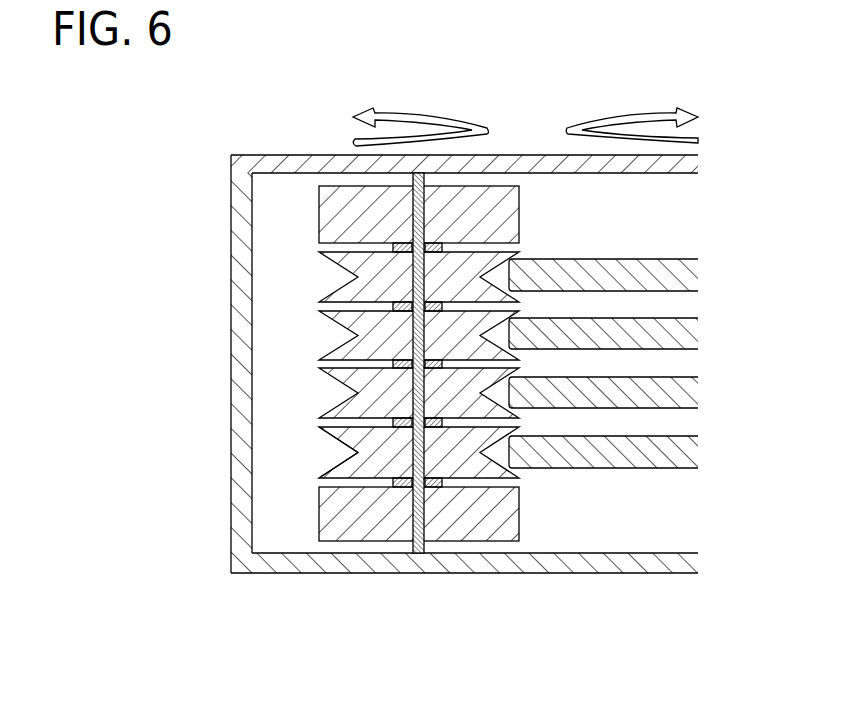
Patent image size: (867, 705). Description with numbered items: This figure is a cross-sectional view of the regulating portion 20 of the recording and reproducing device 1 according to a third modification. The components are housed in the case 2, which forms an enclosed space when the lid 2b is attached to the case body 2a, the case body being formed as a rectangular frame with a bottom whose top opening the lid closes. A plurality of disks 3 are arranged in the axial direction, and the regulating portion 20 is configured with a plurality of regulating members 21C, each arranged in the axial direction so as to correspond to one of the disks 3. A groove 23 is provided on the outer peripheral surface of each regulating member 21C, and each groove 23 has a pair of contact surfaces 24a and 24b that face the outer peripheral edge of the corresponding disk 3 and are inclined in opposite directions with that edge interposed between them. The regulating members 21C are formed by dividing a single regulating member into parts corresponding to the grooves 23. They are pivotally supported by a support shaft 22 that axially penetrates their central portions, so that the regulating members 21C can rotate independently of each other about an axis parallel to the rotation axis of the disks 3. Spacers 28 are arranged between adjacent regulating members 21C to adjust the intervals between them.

The recording and reproducing device 1 is at (120, 132).
The case 2 is at (402, 367).
The case body 2a is at (550, 573).
The lid 2b is at (530, 155).
The disk 3 is at (606, 480).
The regulating portion 20 is at (335, 431).
The regulating member 21C is at (335, 419).
The support shaft 22 is at (418, 542).
The groove 23 is at (335, 466).
The contact surface 24a is at (320, 460).
The contact surface 24b is at (322, 449).
The spacer 28 is at (402, 492).